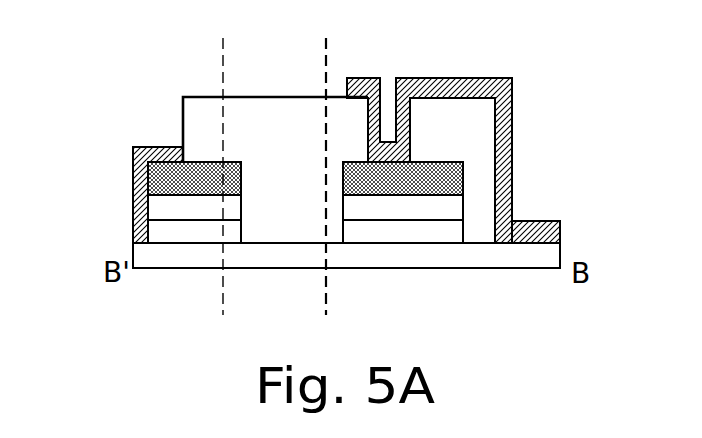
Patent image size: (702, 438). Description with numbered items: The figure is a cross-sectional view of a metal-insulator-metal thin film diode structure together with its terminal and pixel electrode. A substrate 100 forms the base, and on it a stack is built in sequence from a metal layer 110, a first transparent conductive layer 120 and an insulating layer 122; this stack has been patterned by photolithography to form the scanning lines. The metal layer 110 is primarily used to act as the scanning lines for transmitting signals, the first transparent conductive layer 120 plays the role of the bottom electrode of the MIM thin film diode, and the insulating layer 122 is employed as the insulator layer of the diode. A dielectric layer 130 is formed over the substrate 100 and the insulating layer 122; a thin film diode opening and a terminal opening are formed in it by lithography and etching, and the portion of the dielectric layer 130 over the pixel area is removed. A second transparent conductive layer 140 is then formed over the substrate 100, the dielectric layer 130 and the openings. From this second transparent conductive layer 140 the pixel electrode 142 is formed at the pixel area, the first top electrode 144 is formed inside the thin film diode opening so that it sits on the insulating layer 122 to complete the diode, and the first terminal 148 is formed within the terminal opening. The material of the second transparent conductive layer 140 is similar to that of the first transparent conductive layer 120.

The substrate 100 is at (200, 281).
The metal layer 110 is at (158, 235).
The first transparent conductive layer 120 is at (158, 205).
The insulating layer 122 is at (132, 173).
The dielectric layer 130 is at (201, 96).
The second transparent conductive layer 140 is at (498, 133).
The pixel electrode 142 is at (542, 221).
The first top electrode 144 is at (433, 79).
The first terminal 148 is at (146, 146).